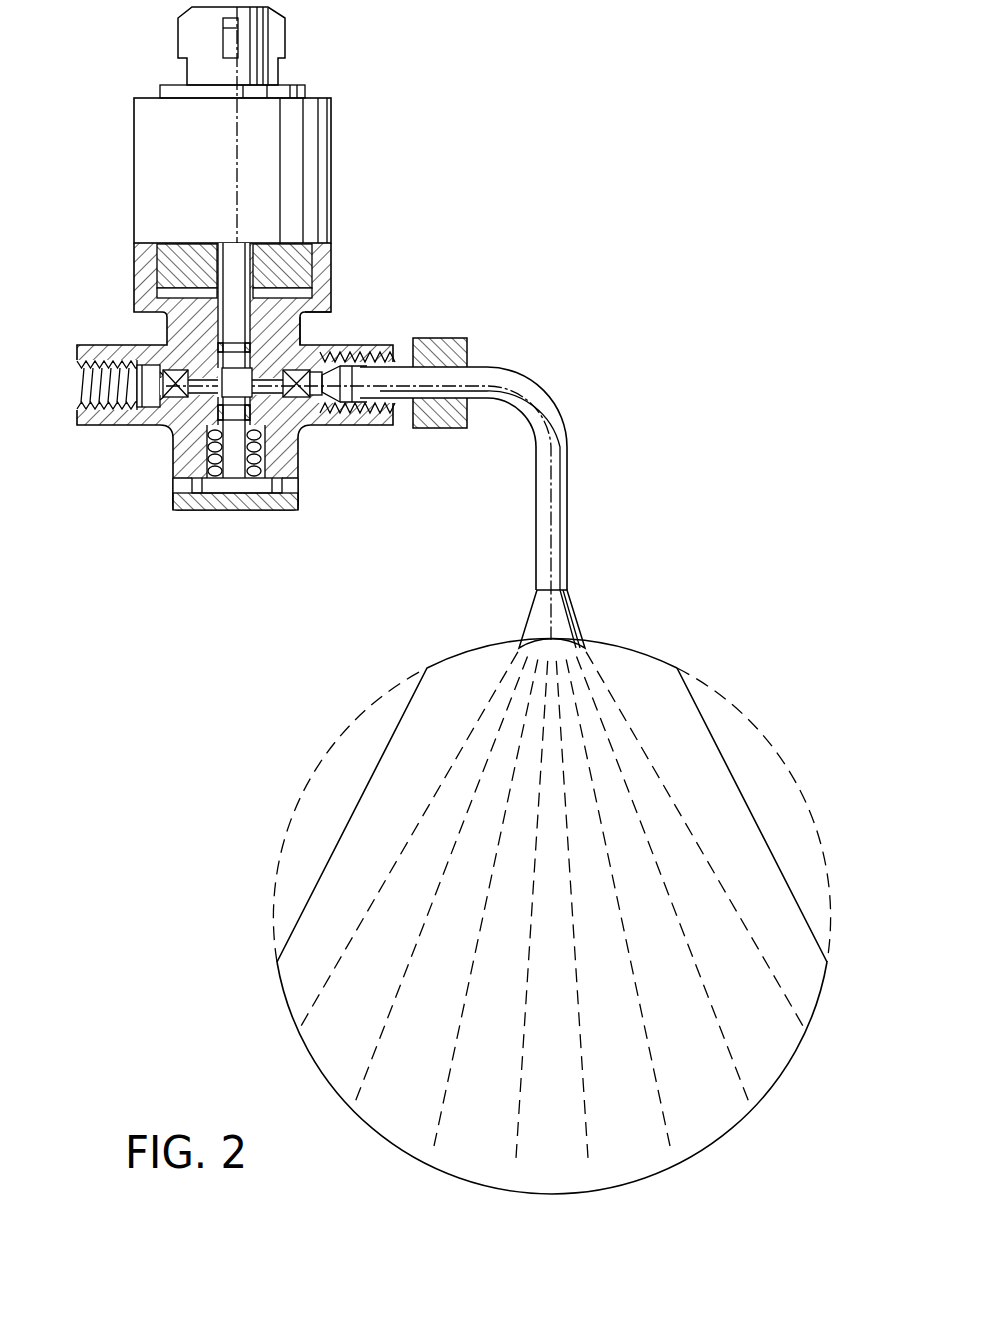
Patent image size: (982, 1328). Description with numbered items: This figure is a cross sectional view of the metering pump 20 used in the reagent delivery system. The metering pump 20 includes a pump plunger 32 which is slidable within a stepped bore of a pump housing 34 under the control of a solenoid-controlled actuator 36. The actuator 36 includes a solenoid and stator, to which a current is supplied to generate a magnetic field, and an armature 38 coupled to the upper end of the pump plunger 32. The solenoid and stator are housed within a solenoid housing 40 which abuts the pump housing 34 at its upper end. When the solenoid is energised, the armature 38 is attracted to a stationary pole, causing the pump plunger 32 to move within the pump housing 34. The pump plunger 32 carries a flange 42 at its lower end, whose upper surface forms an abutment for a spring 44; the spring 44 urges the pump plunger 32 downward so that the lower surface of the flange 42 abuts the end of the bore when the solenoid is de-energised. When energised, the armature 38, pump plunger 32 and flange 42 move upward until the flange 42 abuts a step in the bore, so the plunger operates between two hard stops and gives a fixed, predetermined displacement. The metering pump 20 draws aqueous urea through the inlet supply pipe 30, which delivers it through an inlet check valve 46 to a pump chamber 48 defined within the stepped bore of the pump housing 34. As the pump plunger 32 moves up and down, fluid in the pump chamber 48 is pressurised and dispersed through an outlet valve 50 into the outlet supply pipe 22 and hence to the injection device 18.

The injection device 18 is at (577, 607).
The metering pump 20 is at (505, 288).
The outlet supply pipe 22 is at (550, 397).
The inlet supply pipe 30 is at (80, 387).
The pump plunger 32 is at (240, 326).
The pump housing 34 is at (169, 331).
The solenoid-controlled actuator 36 is at (350, 108).
The armature 38 is at (332, 249).
The solenoid housing 40 is at (138, 112).
The flange 42 is at (212, 488).
The spring 44 is at (258, 460).
The inlet check valve 46 is at (177, 398).
The pump chamber 48 is at (302, 333).
The outlet valve 50 is at (297, 398).